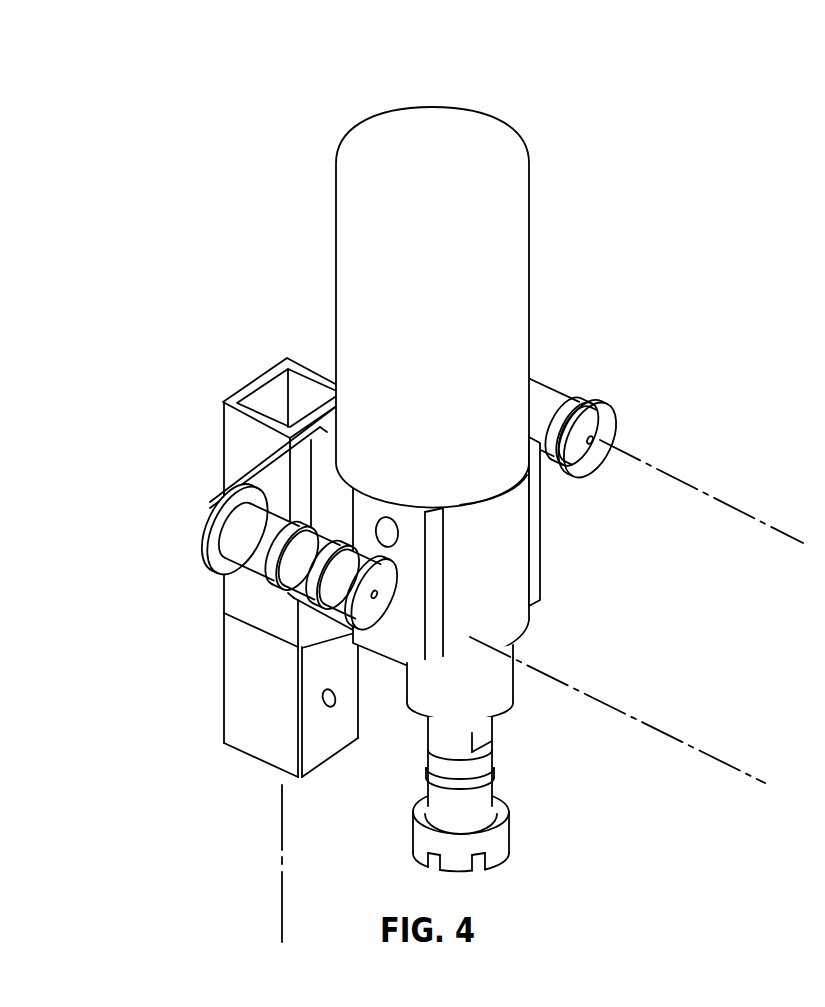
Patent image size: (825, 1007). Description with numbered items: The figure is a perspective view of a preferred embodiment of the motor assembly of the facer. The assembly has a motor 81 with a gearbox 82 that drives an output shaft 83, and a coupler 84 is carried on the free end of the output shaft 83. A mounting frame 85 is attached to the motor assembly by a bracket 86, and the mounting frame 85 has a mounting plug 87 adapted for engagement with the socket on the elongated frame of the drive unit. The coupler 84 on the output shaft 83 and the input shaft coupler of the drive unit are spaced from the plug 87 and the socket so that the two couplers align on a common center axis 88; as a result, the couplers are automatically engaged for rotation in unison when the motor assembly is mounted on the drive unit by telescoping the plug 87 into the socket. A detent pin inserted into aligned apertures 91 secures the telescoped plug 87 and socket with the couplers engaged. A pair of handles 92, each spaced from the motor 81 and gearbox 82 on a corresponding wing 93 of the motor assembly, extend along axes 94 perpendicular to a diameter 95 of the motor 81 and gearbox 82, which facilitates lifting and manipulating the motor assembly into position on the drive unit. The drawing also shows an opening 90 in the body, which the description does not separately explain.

The motor 81 is at (438, 105).
The gearbox 82 is at (540, 528).
The output shaft 83 is at (495, 738).
The coupler 84 is at (508, 842).
The mounting frame 85 is at (300, 450).
The bracket 86 is at (223, 597).
The mounting plug 87 is at (225, 693).
The common center axis 88 is at (281, 893).
The port hole 90 is at (390, 535).
The apertures 91 is at (322, 703).
The handles 92 is at (568, 393).
The wing 93 is at (198, 525).
The axes 94 is at (730, 505).
The diameter 95 is at (336, 235).